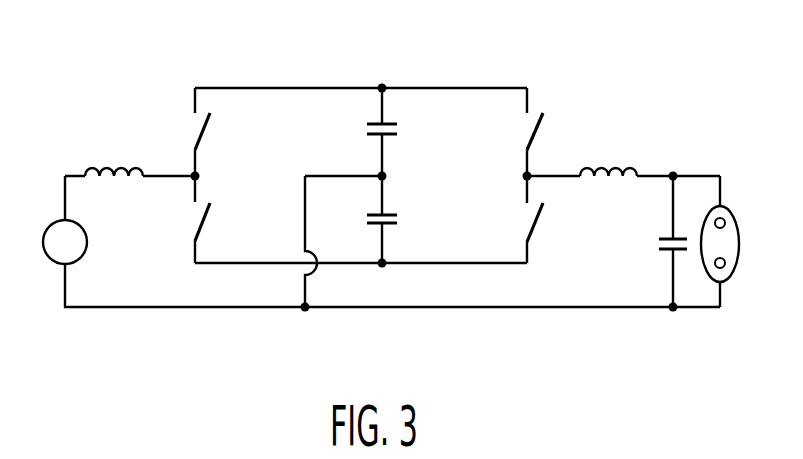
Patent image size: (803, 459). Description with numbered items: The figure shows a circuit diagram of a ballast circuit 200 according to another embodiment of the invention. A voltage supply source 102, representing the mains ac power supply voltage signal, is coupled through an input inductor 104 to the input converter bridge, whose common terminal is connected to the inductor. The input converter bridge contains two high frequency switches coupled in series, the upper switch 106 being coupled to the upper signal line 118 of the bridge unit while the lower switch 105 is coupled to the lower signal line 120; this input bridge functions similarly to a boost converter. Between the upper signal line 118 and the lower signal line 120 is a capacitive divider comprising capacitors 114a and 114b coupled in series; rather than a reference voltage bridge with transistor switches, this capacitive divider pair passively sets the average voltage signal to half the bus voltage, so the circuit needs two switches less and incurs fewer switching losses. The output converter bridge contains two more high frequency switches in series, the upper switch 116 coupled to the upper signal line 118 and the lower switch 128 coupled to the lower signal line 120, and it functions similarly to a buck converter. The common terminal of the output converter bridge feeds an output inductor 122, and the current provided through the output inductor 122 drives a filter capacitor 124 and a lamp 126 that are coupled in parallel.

The ballast circuit 200 is at (90, 331).
The voltage supply source 102 is at (79, 258).
The input inductor 104 is at (86, 172).
The switch HF2 105 is at (192, 236).
The upper switch 106 is at (194, 132).
The capacitor 114a is at (366, 130).
The capacitor 114b is at (386, 211).
The upper switch 116 is at (547, 121).
The upper signal line 118 is at (451, 88).
The lower signal line 120 is at (433, 265).
The output inductor 122 is at (635, 170).
The filter capacitor 124 is at (663, 236).
The lamp 126 is at (739, 258).
The lower switch 128 is at (543, 221).